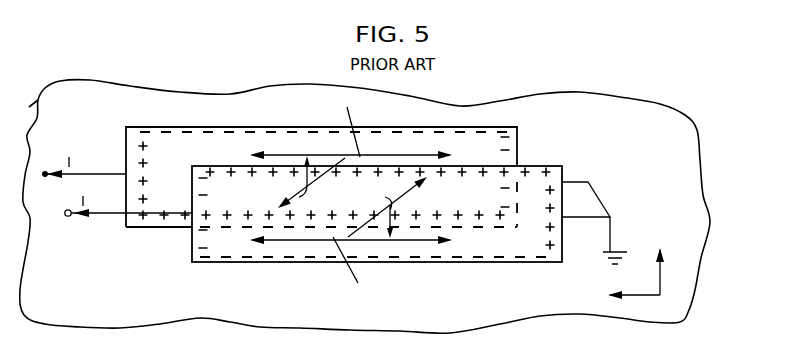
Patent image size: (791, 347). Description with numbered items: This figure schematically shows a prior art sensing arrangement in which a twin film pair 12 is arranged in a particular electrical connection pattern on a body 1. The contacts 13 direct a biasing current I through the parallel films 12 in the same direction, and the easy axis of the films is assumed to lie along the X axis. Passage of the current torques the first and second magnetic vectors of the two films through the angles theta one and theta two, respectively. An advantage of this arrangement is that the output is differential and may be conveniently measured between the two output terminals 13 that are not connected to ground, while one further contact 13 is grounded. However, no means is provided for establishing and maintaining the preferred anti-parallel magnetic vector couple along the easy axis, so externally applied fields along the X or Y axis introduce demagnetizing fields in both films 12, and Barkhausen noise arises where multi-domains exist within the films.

The substrate 1 is at (625, 103).
The twin film pair 12 is at (537, 166).
The contacts 13 is at (100, 172).